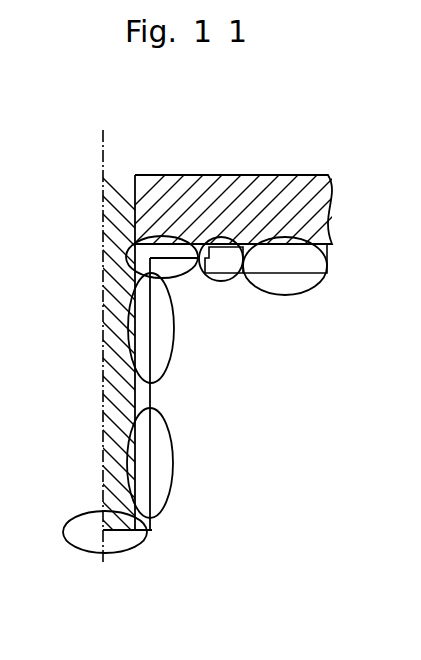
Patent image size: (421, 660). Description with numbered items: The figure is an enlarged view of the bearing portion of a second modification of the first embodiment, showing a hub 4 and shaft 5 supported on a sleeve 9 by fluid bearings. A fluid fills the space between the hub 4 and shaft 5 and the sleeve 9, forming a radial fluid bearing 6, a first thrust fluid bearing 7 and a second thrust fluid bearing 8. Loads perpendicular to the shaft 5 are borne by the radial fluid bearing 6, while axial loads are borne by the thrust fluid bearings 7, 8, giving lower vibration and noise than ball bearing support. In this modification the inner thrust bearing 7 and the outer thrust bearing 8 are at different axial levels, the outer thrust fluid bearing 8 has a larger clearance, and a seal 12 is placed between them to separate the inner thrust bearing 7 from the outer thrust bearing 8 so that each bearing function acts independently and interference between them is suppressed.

The hub 4 is at (231, 193).
The shaft 5 is at (107, 400).
The radial fluid bearing 6 is at (173, 350).
The first thrust fluid bearing 7 is at (188, 280).
The second thrust fluid bearing 8 is at (300, 296).
The sleeve 9 is at (282, 450).
The seal 12 is at (220, 287).